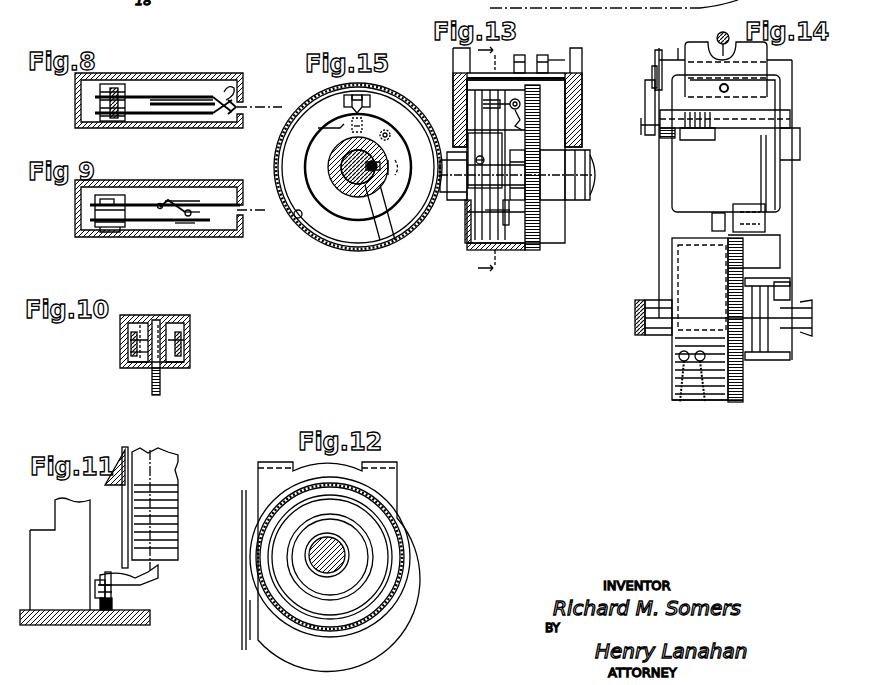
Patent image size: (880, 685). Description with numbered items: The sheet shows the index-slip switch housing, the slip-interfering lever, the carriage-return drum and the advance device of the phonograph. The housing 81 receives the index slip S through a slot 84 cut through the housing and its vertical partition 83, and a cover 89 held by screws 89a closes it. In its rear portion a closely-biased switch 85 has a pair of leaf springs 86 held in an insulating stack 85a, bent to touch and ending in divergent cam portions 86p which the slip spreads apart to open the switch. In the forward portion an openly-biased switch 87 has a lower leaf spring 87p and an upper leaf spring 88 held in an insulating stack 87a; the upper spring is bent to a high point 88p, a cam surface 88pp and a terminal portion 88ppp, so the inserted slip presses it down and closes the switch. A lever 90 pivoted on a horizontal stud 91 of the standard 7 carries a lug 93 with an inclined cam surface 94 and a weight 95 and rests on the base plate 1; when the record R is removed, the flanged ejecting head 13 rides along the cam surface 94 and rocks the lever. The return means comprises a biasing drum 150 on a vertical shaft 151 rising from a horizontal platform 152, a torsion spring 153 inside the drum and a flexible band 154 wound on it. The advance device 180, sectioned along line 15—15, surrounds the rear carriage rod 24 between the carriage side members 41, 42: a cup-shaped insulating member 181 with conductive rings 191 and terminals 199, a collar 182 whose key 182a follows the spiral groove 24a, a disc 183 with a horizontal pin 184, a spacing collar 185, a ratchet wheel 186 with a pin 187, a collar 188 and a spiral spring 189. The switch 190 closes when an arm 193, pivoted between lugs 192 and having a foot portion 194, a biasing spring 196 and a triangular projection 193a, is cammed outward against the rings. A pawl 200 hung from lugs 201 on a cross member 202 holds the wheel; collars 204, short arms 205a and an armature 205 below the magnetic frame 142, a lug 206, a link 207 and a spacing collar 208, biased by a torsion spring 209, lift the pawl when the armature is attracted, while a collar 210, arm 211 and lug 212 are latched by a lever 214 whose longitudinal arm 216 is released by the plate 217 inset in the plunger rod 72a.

In FIG. 11, the base plate 1 is at (68, 626).
In FIG. 11, the standard 7 is at (55, 508).
In FIG. 11, the flanged ejecting head 13 is at (128, 450).
In FIG. 11, the cylindrical record R is at (172, 480).
In FIG. 13, the righthand end knob 15 is at (497, 160).
In FIG. 13, the rear carriage rod 24 is at (584, 177).
In FIG. 14, the rear carriage rod 24 is at (650, 302).
In FIG. 15, the rear carriage rod 24 is at (340, 175).
In FIG. 13, the spiral groove 24a is at (592, 166).
In FIG. 14, the spiral groove 24a is at (642, 332).
In FIG. 13, the lefthand carriage side member 41 is at (580, 52).
In FIG. 14, the lefthand carriage side member 41 is at (790, 262).
In FIG. 13, the righthand carriage side member 42 is at (458, 56).
In FIG. 14, the righthand carriage side member 42 is at (668, 285).
In FIG. 14, the plunger rod 72a is at (728, 32).
In FIG. 8, the housing 81 is at (244, 76).
In FIG. 9, the housing 81 is at (90, 236).
In FIG. 10, the housing 81 is at (193, 317).
In FIG. 10, the vertical partition 83 is at (137, 368).
In FIG. 8, the slot 84 is at (168, 103).
In FIG. 9, the slot 84 is at (207, 204).
In FIG. 8, the closely-biased switch 85 is at (218, 98).
In FIG. 8, the insulating stack 85a is at (96, 105).
In FIG. 8, the leaf springs 86 is at (187, 95).
In FIG. 10, the leaf springs 86 is at (190, 332).
In FIG. 8, the divergent cam portions 86p is at (245, 90).
In FIG. 9, the openly-biased switch 87 is at (203, 218).
In FIG. 9, the insulating stack 87a is at (105, 214).
In FIG. 9, the lower leaf spring 87p is at (165, 222).
In FIG. 10, the lower leaf spring 87p is at (125, 352).
In FIG. 9, the upper leaf spring 88 is at (160, 203).
In FIG. 10, the upper leaf spring 88 is at (125, 340).
In FIG. 9, the high point 88p is at (169, 200).
In FIG. 9, the cam surface 88pp is at (190, 209).
In FIG. 9, the terminal portion 88ppp is at (192, 220).
In FIG. 8, the cover 89 is at (200, 96).
In FIG. 9, the cover 89 is at (178, 204).
In FIG. 10, the cover 89 is at (170, 316).
In FIG. 10, the screws 89a is at (160, 387).
In FIG. 11, the lever 90 is at (108, 606).
In FIG. 11, the horizontal stud 91 is at (113, 598).
In FIG. 11, the lug 93 is at (120, 585).
In FIG. 11, the inclined cam surface 94 is at (142, 578).
In FIG. 15, the weight 95 is at (340, 85).
In FIG. 14, the magnetic frame 142 is at (768, 52).
In FIG. 12, the biasing drum 150 is at (398, 522).
In FIG. 12, the vertical shaft 151 is at (345, 553).
In FIG. 12, the horizontal platform 152 is at (388, 482).
In FIG. 12, the torsion spring 153 is at (382, 560).
In FIG. 12, the flexible band 154 is at (244, 635).
In FIG. 14, the advance device 180 is at (660, 370).
In FIG. 13, the cup-shaped member 181 is at (472, 245).
In FIG. 14, the cup-shaped member 181 is at (712, 398).
In FIG. 13, the collar 182 is at (485, 160).
In FIG. 15, the collar 182 is at (385, 240).
In FIG. 13, the key 182a is at (458, 130).
In FIG. 15, the key 182a is at (398, 240).
In FIG. 13, the disc 183 is at (512, 212).
In FIG. 15, the disc 183 is at (352, 212).
In FIG. 13, the horizontal pin 184 is at (510, 152).
In FIG. 15, the horizontal pin 184 is at (392, 137).
In FIG. 13, the spacing collar 185 is at (545, 218).
In FIG. 13, the ratchet wheel 186 is at (540, 245).
In FIG. 15, the ratchet wheel 186 is at (335, 238).
In FIG. 13, the pin 187 is at (545, 168).
In FIG. 15, the pin 187 is at (400, 168).
In FIG. 13, the collar 188 is at (540, 140).
In FIG. 14, the collar 188 is at (778, 300).
In FIG. 14, the spiral spring 189 is at (762, 288).
In FIG. 13, the electrical switch 190 is at (540, 92).
In FIG. 13, the conductive rings 191 is at (520, 250).
In FIG. 15, the conductive rings 191 is at (298, 220).
In FIG. 15, the lugs 192 is at (350, 105).
In FIG. 15, the arm 193 is at (370, 95).
In FIG. 15, the triangular projection 193a is at (336, 132).
In FIG. 13, the foot portion 194 is at (525, 105).
In FIG. 13, the biasing spring 196 is at (535, 120).
In FIG. 15, the biasing spring 196 is at (364, 125).
In FIG. 14, the terminals 199 is at (702, 352).
In FIG. 14, the pawl 200 is at (754, 251).
In FIG. 13, the lugs 201 is at (542, 55).
In FIG. 14, the lugs 201 is at (720, 213).
In FIG. 13, the cross member 202 is at (558, 62).
In FIG. 14, the collars 204 is at (673, 138).
In FIG. 14, the armature 205 is at (703, 112).
In FIG. 14, the short arms 205a is at (690, 140).
In FIG. 14, the lug 206 is at (790, 152).
In FIG. 14, the link 207 is at (760, 172).
In FIG. 14, the horizontal spacing collar 208 is at (752, 208).
In FIG. 14, the torsion spring 209 is at (706, 130).
In FIG. 14, the collar 210 is at (648, 133).
In FIG. 14, the arm 211 is at (646, 90).
In FIG. 14, the short lug 212 is at (652, 72).
In FIG. 14, the lever 214 is at (656, 52).
In FIG. 14, the longitudinal arm 216 is at (678, 46).
In FIG. 14, the small vertical plate 217 is at (718, 36).
In FIG. 8, the index slip S is at (263, 102).
In FIG. 9, the index slip S is at (248, 208).